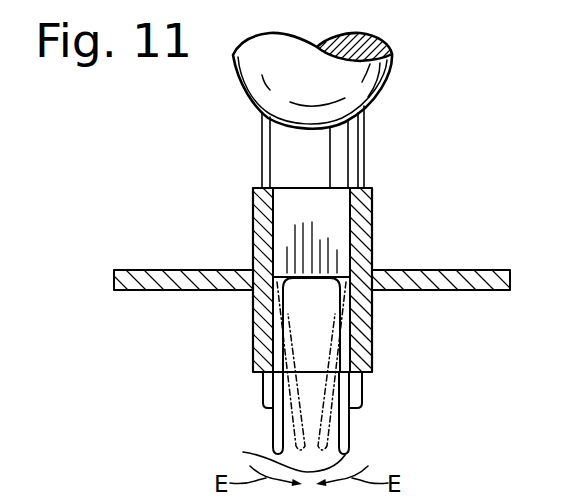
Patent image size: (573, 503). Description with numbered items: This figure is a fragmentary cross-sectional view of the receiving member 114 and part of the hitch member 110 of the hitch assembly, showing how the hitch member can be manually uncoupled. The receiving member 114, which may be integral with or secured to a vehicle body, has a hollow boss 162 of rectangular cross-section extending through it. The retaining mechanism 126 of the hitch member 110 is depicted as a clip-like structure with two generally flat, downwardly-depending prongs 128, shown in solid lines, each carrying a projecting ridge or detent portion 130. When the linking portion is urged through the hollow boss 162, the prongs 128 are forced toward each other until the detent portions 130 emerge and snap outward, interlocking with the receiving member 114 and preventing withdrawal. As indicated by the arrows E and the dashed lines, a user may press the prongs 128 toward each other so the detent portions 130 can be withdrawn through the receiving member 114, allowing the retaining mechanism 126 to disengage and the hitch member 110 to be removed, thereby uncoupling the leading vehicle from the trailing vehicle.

The hitch member 110 is at (400, 101).
The receiving member 114 is at (458, 253).
The retaining mechanism 126 is at (386, 441).
The prongs 128 is at (273, 457).
The detent portions 130 is at (263, 390).
The hollow boss 162 is at (335, 312).